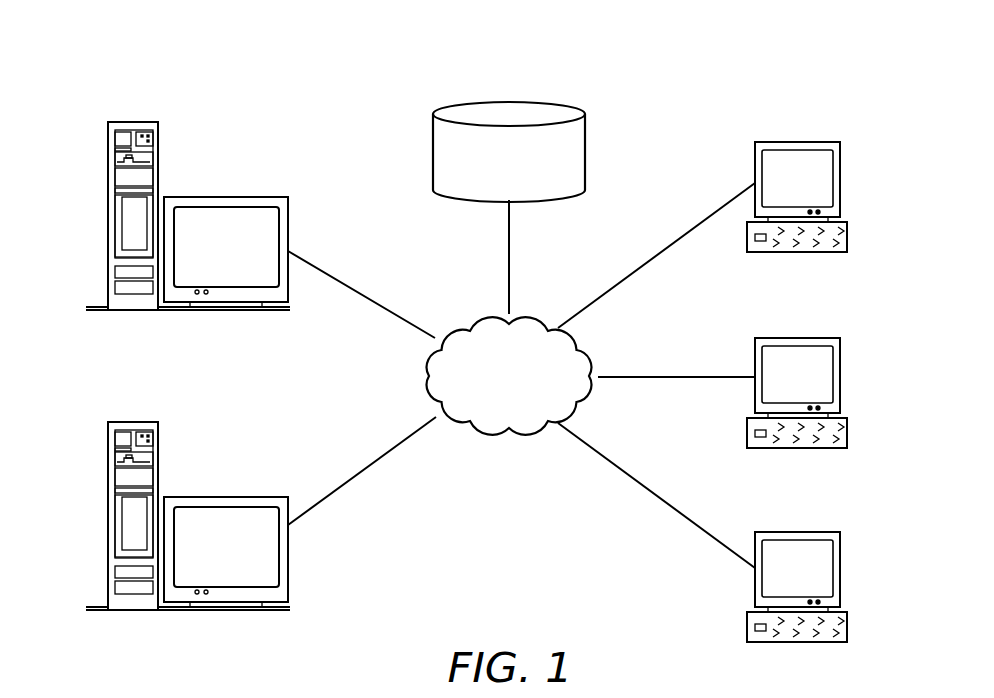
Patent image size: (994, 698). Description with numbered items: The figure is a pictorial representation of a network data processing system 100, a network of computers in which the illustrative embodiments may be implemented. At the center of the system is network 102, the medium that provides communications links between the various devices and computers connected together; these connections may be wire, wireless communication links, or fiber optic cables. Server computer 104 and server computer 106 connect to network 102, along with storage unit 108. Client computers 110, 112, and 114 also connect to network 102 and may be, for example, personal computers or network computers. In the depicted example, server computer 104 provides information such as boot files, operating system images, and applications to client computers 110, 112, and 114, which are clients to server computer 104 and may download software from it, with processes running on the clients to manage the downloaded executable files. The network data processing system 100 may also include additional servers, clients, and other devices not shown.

The network data processing system 100 is at (342, 68).
The network 102 is at (500, 440).
The server computer 104 is at (108, 213).
The server computer 106 is at (108, 513).
The storage unit 108 is at (585, 152).
The client computer 110 is at (840, 181).
The client computer 112 is at (840, 376).
The client computer 114 is at (840, 570).